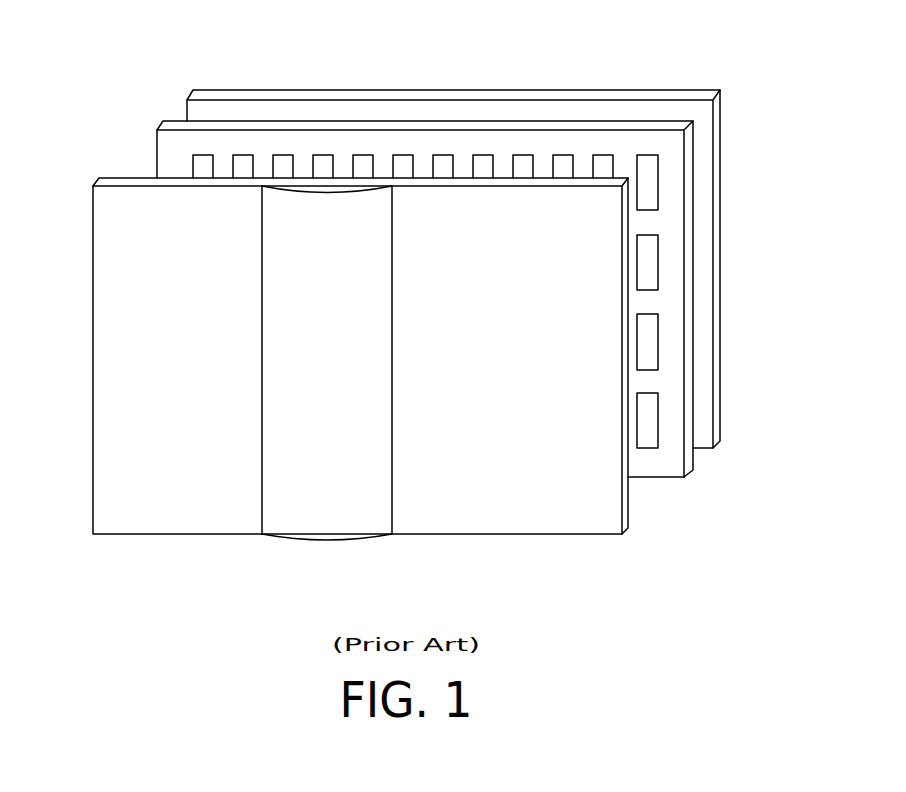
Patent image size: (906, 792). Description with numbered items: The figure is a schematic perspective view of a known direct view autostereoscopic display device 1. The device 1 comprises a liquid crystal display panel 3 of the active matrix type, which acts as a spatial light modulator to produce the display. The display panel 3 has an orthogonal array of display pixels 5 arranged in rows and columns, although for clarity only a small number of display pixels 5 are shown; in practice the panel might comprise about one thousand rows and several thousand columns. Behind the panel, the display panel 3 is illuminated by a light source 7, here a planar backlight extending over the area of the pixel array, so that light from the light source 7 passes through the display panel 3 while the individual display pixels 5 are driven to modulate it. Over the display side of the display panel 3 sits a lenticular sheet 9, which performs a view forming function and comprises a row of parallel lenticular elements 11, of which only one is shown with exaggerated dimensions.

The autostereoscopic display device 1 is at (100, 116).
The liquid crystal display panel 3 is at (690, 462).
The display pixels 5 is at (648, 188).
The light source 7 is at (722, 421).
The lenticular sheet 9 is at (625, 508).
The lenticular elements 11 is at (357, 525).